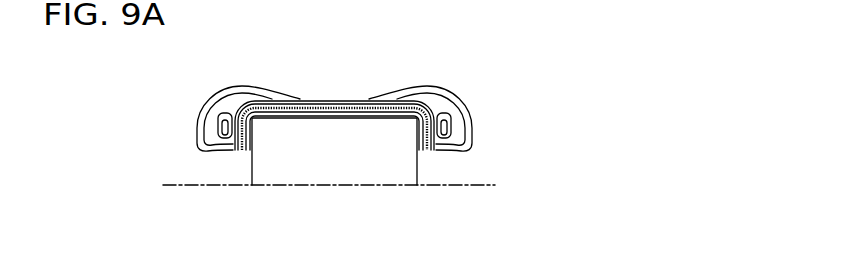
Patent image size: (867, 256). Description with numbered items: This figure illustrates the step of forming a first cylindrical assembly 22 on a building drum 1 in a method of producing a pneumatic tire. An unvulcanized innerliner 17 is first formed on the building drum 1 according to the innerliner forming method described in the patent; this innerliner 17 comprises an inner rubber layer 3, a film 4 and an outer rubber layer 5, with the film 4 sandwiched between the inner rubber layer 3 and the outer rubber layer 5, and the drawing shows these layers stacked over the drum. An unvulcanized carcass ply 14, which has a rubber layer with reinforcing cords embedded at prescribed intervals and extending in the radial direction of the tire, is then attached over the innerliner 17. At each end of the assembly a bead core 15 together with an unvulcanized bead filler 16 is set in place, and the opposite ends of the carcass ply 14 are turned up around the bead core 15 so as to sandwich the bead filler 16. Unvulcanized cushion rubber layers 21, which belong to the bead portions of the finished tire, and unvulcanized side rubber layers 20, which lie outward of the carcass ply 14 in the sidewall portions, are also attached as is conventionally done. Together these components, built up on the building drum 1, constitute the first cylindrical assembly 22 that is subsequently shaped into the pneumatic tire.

The building drum 1 is at (417, 173).
The inner rubber layer 3 is at (282, 118).
The film 4 is at (305, 112).
The outer rubber layer 5 is at (363, 110).
The carcass ply 14 is at (332, 108).
The bead core 15 is at (210, 144).
The bead filler 16 is at (207, 118).
The innerliner 17 is at (344, 127).
The side rubber layer 20 is at (447, 88).
The cushion rubber layer 21 is at (460, 143).
The first cylindrical assembly 22 is at (271, 71).